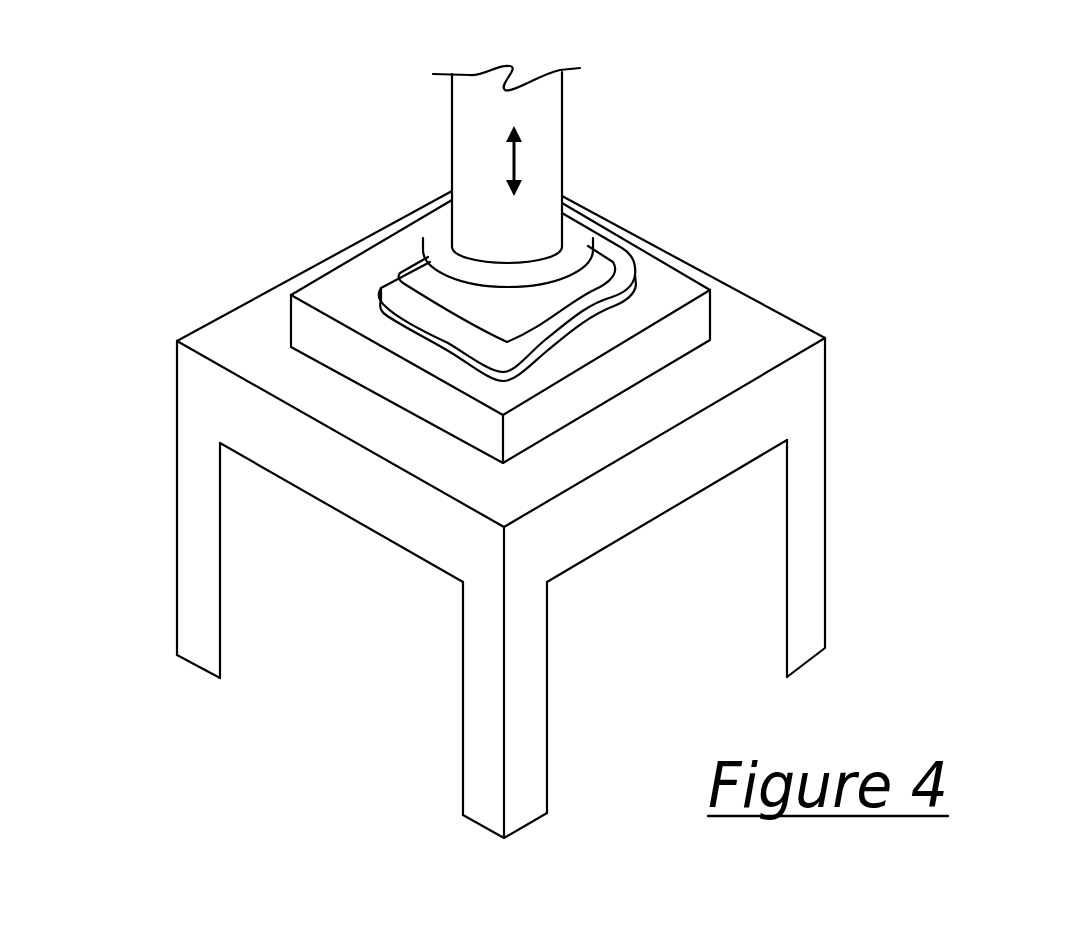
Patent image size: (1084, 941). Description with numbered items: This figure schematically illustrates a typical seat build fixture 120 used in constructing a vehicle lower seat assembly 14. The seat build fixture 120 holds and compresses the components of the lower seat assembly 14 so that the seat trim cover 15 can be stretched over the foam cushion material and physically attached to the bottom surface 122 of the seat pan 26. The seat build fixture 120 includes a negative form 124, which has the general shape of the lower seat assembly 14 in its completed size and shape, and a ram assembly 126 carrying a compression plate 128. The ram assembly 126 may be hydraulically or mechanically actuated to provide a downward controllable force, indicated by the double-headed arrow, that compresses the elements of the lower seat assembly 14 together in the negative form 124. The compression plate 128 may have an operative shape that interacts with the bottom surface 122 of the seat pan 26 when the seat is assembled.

The seat build fixture 120 is at (200, 201).
The lower seat assembly 14 is at (515, 257).
The seat trim cover 15 is at (388, 288).
The seat pan 26 is at (408, 276).
The ram assembly 126 is at (567, 172).
The compression plate 128 is at (580, 237).
The bottom surface 122 is at (597, 275).
The negative form 124 is at (694, 292).